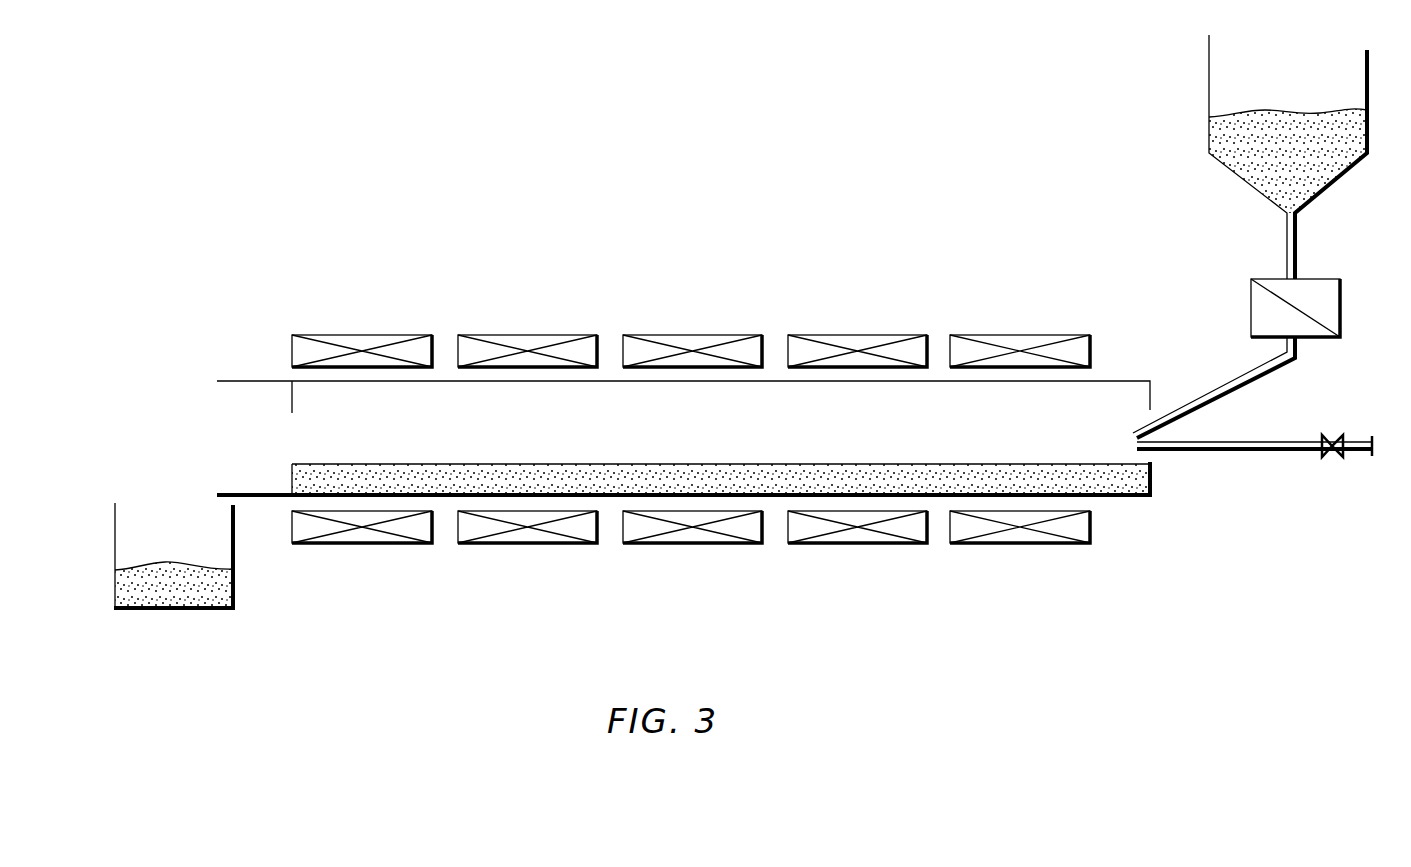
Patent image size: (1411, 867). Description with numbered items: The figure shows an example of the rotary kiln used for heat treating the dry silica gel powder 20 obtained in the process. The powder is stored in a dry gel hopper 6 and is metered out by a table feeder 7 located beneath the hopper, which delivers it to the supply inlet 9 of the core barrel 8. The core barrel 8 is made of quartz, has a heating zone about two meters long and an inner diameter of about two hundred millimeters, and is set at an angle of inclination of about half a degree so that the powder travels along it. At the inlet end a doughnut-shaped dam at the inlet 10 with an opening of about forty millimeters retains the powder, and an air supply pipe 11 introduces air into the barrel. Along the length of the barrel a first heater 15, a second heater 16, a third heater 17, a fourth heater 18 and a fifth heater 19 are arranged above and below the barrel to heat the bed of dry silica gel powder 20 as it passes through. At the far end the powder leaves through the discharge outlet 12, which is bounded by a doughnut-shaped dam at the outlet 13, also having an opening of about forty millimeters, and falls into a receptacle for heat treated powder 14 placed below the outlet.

The dry gel hopper 6 is at (1209, 108).
The table feeder 7 is at (1251, 300).
The core barrel 8 is at (1140, 498).
The supply inlet 9 is at (1255, 419).
The doughnut-shaped dam at the inlet 10 is at (1152, 475).
The air supply pipe 11 is at (1331, 478).
The discharge outlet 12 is at (290, 418).
The doughnut-shaped dam at the outlet 13 is at (292, 478).
The receptacle for heat treated powder 14 is at (237, 587).
The first heater 15 is at (1012, 333).
The second heater 16 is at (865, 333).
The third heater 17 is at (690, 333).
The fourth heater 18 is at (527, 333).
The fifth heater 19 is at (357, 333).
The dry silica gel powder 20 is at (945, 482).